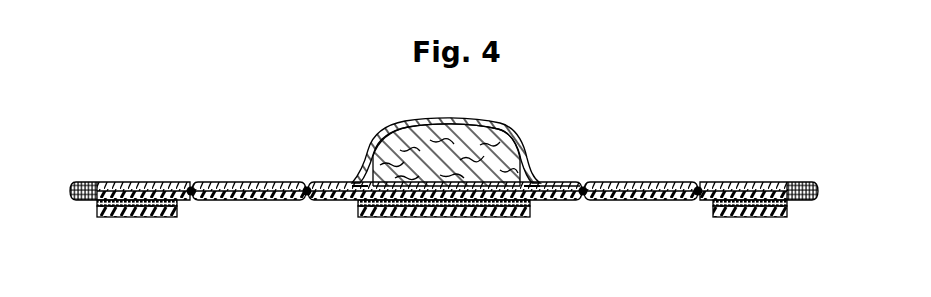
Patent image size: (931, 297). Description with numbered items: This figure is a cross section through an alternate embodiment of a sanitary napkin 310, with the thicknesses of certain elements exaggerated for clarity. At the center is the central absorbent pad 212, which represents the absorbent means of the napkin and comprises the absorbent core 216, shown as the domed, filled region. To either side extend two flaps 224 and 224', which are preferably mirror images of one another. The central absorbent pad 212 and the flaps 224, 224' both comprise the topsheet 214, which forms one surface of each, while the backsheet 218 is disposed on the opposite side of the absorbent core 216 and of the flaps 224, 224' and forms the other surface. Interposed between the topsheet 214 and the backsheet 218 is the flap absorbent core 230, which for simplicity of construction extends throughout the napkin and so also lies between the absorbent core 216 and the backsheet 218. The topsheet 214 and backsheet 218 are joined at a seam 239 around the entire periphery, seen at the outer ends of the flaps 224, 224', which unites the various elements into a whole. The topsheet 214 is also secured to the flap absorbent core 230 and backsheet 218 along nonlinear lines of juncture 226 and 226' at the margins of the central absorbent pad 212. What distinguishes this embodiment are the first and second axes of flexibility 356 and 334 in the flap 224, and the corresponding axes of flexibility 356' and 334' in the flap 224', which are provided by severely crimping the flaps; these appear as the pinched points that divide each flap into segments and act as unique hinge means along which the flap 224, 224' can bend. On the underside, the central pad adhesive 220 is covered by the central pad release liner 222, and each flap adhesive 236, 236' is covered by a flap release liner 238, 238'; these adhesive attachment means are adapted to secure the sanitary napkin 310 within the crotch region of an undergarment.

The central absorbent pad 212 is at (397, 115).
The sanitary napkin 310 is at (461, 129).
The absorbent core 216 is at (495, 151).
The topsheet 214 is at (514, 188).
The nonlinear line of juncture 226 is at (340, 159).
The nonlinear line of juncture 226' is at (582, 159).
The backsheet 218 is at (565, 200).
The central pad adhesive 220 is at (358, 203).
The central pad release liner 222 is at (449, 228).
The flap absorbent core 230 is at (545, 203).
The flap 224 is at (249, 155).
The flap 224' is at (642, 155).
The second axis of flexibility 334 is at (164, 164).
The second axis of flexibility 334' is at (721, 166).
The first axis of flexibility 356 is at (282, 164).
The first axis of flexibility 356' is at (611, 174).
The seam 239 is at (88, 181).
The flap adhesive 236 is at (172, 221).
The flap adhesive 236' is at (715, 221).
The flap release liner 238 is at (172, 228).
The flap release liner 238' is at (715, 229).